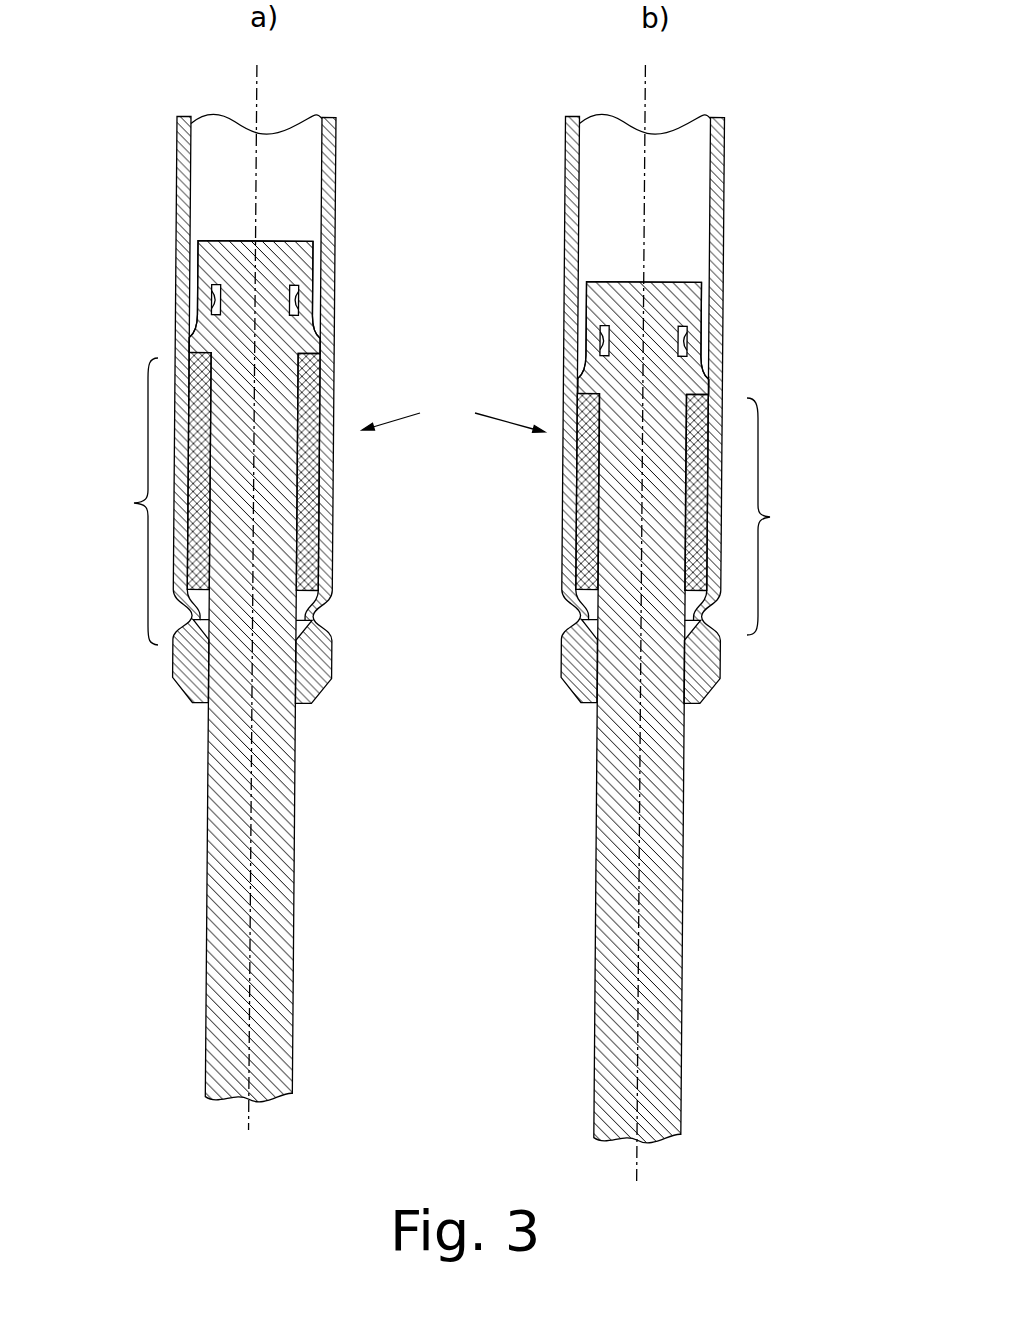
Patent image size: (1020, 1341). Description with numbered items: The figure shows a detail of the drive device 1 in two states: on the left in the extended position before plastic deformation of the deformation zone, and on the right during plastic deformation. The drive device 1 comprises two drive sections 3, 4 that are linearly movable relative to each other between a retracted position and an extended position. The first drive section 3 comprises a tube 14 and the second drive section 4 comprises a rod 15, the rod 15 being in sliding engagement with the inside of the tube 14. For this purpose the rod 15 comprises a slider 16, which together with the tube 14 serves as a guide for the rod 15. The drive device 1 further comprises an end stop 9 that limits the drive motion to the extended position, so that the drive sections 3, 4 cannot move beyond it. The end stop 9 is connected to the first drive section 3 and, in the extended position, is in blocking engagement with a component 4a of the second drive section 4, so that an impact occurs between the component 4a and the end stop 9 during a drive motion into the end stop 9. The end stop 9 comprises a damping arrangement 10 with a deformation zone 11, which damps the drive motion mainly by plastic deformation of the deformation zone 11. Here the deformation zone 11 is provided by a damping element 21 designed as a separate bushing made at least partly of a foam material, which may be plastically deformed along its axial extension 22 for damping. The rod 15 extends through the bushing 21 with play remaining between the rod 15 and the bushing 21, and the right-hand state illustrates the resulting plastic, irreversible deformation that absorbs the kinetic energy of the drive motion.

The drive device 1 is at (456, 407).
The first drive section 3 is at (456, 407).
The tube 14 is at (124, 204).
The second drive section 4 is at (528, 691).
The rod 15 is at (276, 974).
The component of the second drive section 4a is at (532, 317).
The slider 16 is at (336, 338).
The end stop 9 is at (452, 501).
The damping arrangement 10 is at (453, 411).
The deformation zone 11 is at (447, 471).
The damping element 21 is at (576, 553).
The axial extension 22 is at (258, 88).